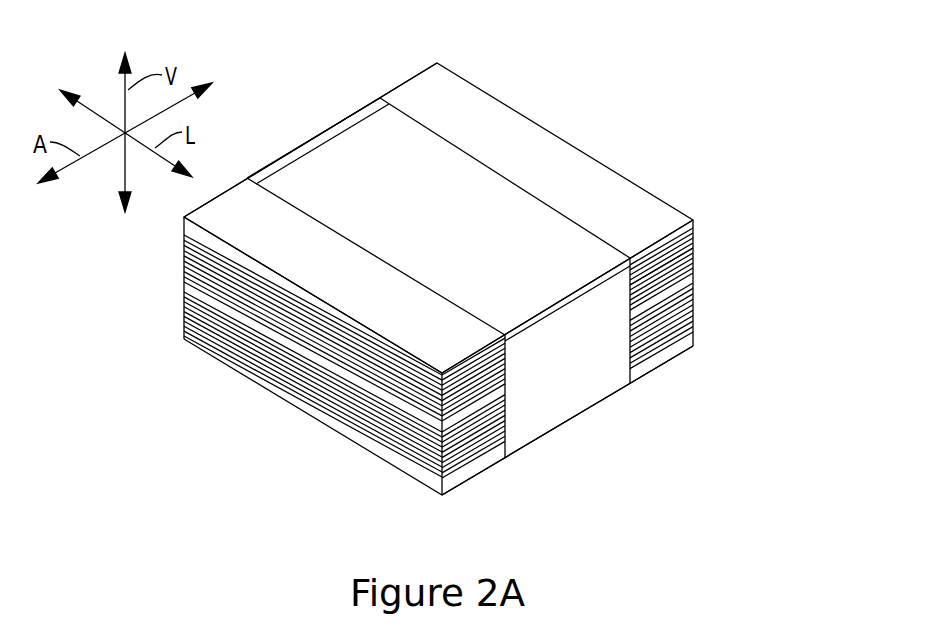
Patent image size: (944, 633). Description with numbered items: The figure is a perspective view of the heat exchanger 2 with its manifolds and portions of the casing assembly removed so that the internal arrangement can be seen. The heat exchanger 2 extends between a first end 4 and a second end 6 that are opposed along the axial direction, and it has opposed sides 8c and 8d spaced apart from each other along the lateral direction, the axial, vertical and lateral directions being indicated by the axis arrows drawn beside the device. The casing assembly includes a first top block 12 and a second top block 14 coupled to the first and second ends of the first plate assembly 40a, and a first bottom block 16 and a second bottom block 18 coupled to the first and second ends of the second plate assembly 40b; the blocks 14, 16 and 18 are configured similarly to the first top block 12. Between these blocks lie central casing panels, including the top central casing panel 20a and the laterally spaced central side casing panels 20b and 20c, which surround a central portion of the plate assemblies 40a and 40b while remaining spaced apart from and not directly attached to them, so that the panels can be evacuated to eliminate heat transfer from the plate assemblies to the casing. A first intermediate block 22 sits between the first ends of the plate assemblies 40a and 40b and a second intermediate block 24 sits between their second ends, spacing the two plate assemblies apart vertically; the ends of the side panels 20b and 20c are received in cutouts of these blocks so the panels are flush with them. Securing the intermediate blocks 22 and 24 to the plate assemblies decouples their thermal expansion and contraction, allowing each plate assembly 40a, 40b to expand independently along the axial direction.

The heat exchanger 2 is at (279, 78).
The first end 4 is at (199, 419).
The second end 6 is at (646, 106).
The side 8c is at (377, 68).
The side 8d is at (625, 432).
The first top block 12 is at (317, 240).
The second top block 14 is at (473, 112).
The first bottom block 16 is at (470, 472).
The second bottom block 18 is at (668, 352).
The top central casing panel 20a is at (483, 192).
The central side casing panel 20b is at (297, 150).
The central side casing panel 20c is at (558, 413).
The first intermediate block 22 is at (212, 293).
The second intermediate block 24 is at (683, 287).
The first plate assembly 40a is at (716, 242).
The second plate assembly 40b is at (716, 306).